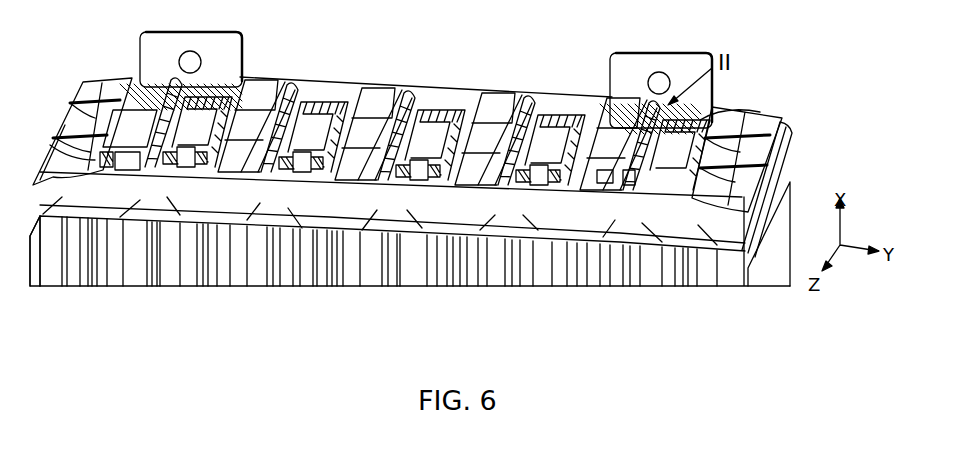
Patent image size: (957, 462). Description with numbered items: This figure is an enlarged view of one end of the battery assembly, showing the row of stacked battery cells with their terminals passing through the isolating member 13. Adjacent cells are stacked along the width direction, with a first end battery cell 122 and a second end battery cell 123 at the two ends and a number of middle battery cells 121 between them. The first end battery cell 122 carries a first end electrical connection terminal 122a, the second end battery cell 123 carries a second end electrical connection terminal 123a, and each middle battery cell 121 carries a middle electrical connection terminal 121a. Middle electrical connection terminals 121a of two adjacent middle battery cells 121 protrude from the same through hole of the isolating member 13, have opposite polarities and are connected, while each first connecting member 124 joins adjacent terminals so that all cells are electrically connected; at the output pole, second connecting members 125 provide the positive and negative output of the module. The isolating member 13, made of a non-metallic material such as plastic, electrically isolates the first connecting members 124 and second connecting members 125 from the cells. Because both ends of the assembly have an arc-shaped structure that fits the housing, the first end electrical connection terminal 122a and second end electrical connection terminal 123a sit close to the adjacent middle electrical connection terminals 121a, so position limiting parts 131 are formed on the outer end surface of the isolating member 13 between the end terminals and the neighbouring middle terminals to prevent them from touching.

The isolating member 13 is at (768, 158).
The middle battery cell 121 is at (407, 278).
The middle electrical connection terminal 121a is at (617, 128).
The first end battery cell 122 is at (53, 284).
The first end electrical connection terminal 122a is at (80, 103).
The second end battery cell 123 is at (723, 278).
The second end electrical connection terminal 123a is at (713, 107).
The first connecting member 124 is at (547, 117).
The second connecting member 125 is at (657, 53).
The position limiting part 131 is at (660, 107).